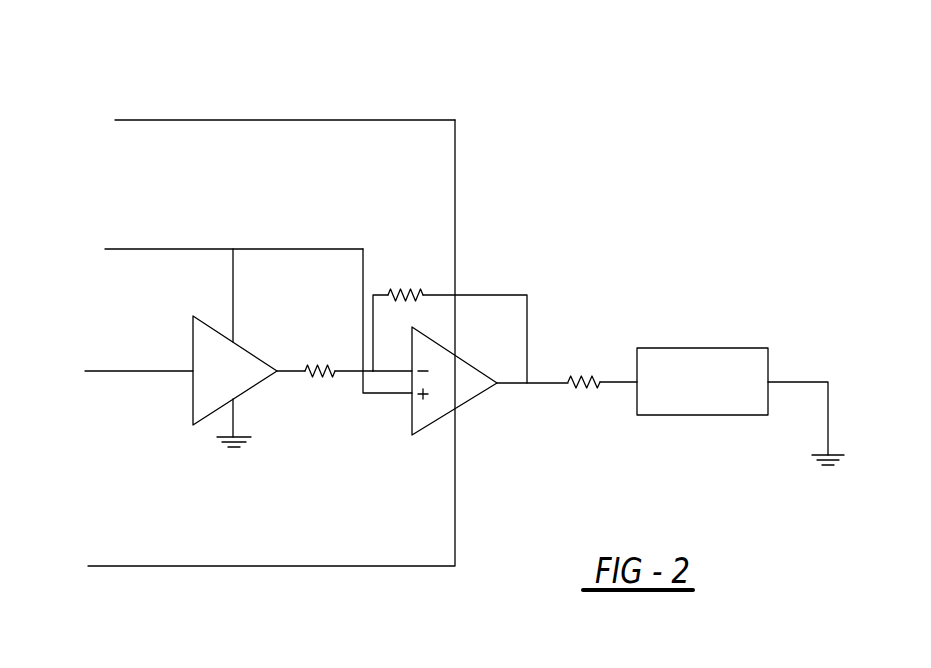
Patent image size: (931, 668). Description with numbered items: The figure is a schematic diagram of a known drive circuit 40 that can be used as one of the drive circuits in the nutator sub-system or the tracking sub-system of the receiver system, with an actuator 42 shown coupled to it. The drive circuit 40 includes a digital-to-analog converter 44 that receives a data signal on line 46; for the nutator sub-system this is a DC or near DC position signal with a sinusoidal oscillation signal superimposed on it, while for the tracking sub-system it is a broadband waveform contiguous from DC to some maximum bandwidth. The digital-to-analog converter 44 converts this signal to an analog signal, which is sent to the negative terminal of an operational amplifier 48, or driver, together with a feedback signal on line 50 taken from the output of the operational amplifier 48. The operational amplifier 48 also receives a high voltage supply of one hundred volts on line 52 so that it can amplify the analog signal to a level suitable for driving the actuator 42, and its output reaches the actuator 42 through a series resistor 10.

The drive circuit 40 is at (625, 163).
The line 52 is at (143, 120).
The line 46 is at (93, 372).
The digital-to-analog converter 44 is at (193, 412).
The operational amplifier 48 is at (473, 397).
The line 50 is at (513, 295).
The output resistor 10 is at (602, 368).
The actuator 42 is at (707, 348).